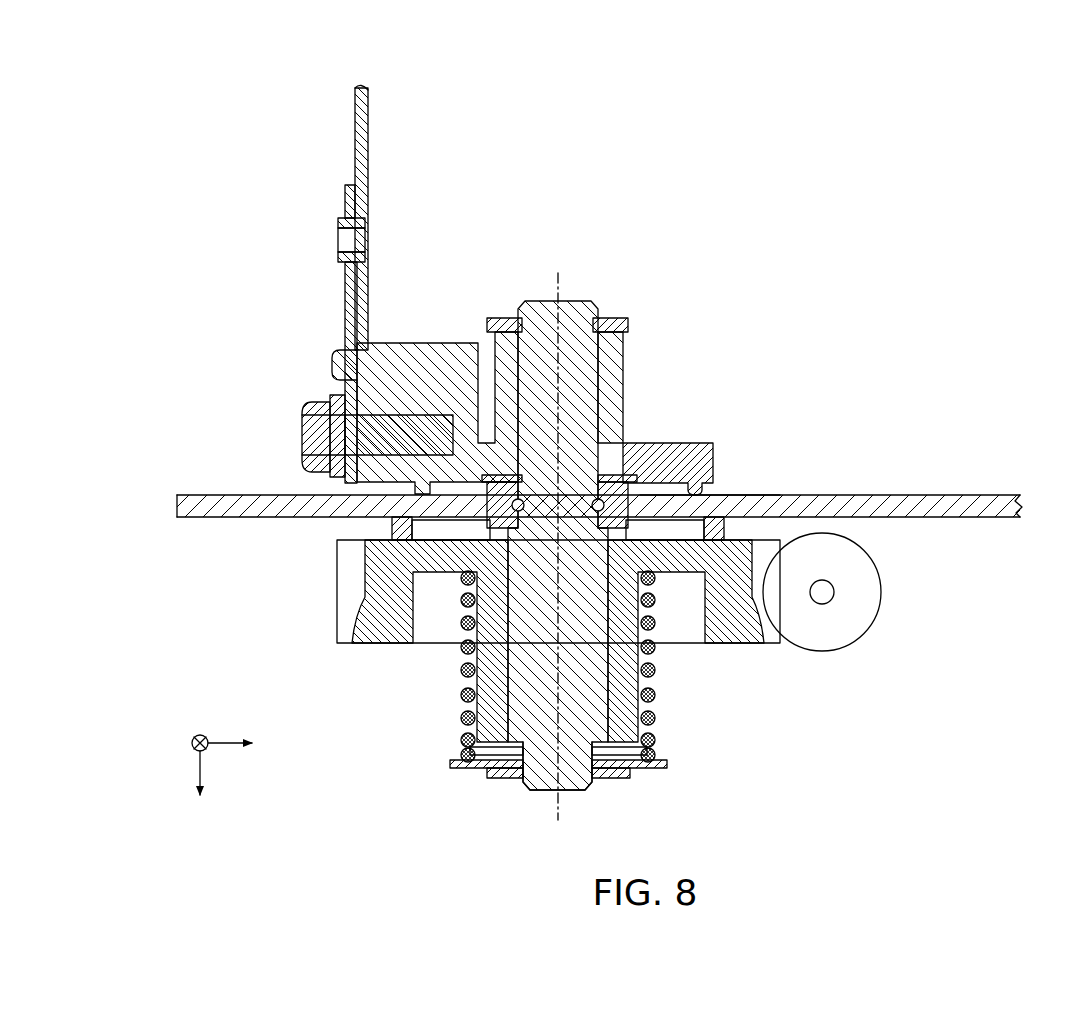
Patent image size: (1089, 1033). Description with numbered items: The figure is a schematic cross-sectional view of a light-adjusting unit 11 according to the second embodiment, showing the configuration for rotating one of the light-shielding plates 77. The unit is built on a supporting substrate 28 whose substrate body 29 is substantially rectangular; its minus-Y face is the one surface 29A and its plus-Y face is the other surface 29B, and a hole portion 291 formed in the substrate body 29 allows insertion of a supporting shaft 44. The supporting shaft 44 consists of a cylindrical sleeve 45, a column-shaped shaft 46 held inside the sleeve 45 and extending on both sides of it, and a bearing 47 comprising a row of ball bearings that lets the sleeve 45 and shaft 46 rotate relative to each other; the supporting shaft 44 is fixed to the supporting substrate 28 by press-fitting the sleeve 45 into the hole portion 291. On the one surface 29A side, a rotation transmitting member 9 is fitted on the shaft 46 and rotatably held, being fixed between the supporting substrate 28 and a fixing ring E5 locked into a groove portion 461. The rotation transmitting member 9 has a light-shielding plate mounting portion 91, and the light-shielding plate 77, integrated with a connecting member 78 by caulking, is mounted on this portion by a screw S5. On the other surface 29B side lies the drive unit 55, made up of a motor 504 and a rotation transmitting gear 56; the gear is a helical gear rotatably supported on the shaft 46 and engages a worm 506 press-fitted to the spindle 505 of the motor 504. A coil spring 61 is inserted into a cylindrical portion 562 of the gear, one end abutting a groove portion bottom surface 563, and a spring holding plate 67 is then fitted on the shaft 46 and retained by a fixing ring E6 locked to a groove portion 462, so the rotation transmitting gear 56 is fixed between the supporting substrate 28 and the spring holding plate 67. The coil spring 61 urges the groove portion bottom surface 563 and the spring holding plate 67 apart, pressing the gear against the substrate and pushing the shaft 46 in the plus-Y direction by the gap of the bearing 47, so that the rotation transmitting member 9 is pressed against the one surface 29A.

The light-adjusting unit 11 is at (750, 158).
The light-shielding plate 77 is at (388, 118).
The connecting member 78 is at (345, 295).
The light-shielding plate mounting portion 91 is at (422, 343).
The screw S5 is at (300, 433).
The supporting shaft 44 is at (733, 335).
The groove portion 461 is at (580, 300).
The fixing ring E5 is at (508, 318).
The shaft 46 is at (605, 352).
The bearing 47 is at (580, 480).
The sleeve 45 is at (655, 480).
The rotation transmitting member 9 is at (713, 463).
The substrate body 29 is at (975, 495).
The supporting substrate 28 is at (599, 506).
The one surface 29A is at (938, 495).
The other surface 29B is at (930, 518).
The hole portion 291 is at (712, 494).
The drive unit 55 is at (693, 684).
The rotation transmitting gear 56 is at (745, 645).
The groove portion bottom surface 563 is at (668, 575).
The coil spring 61 is at (658, 703).
The cylindrical portion 562 is at (655, 723).
The motor 504 is at (965, 592).
The spindle 505 is at (833, 590).
The worm 506 is at (835, 620).
The fixing ring E6 is at (613, 778).
The spring holding plate 67 is at (640, 770).
The groove portion 462 is at (575, 790).